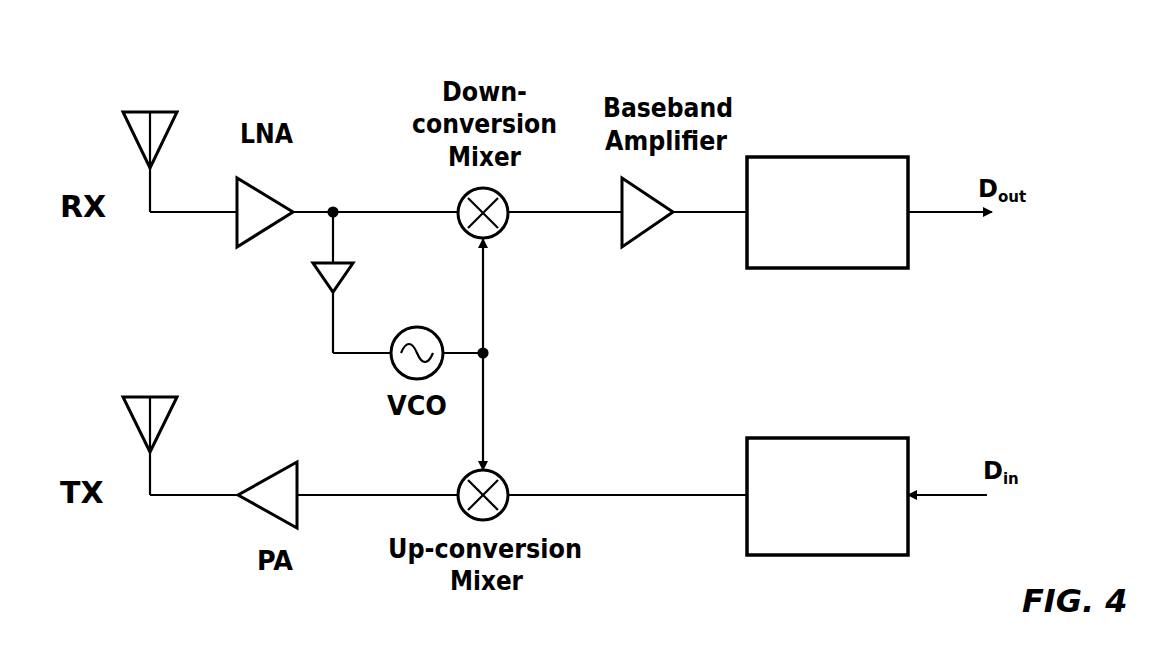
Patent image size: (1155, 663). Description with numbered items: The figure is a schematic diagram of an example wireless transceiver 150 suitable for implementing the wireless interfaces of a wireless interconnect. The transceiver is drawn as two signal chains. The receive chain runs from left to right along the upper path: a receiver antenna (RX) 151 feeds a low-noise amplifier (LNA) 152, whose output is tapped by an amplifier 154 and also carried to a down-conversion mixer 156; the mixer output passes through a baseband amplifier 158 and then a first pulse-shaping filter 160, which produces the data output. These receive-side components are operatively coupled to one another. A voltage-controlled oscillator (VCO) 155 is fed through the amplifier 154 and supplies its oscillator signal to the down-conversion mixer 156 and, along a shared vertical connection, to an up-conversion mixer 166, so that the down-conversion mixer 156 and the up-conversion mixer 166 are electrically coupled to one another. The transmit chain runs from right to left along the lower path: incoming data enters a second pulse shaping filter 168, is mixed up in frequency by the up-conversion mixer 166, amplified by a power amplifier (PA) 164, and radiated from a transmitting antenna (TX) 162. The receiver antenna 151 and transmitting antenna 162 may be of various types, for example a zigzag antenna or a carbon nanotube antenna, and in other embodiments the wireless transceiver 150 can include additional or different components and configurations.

The wireless transceiver 150 is at (931, 119).
The receiver antenna 151 is at (177, 112).
The low-noise amplifier 152 is at (283, 203).
The amplifier 154 is at (340, 272).
The voltage-controlled oscillator 155 is at (415, 328).
The down-conversion mixer 156 is at (513, 207).
The baseband amplifier 158 is at (667, 200).
The first pulse-shaping filter 160 is at (848, 157).
The transmitting antenna 162 is at (177, 397).
The power amplifier 164 is at (297, 478).
The up-conversion mixer 166 is at (507, 480).
The second pulse shaping filter 168 is at (868, 438).